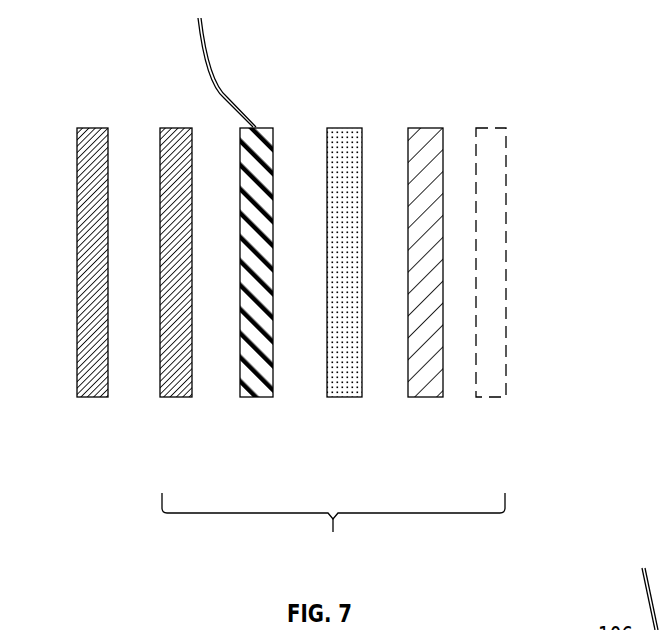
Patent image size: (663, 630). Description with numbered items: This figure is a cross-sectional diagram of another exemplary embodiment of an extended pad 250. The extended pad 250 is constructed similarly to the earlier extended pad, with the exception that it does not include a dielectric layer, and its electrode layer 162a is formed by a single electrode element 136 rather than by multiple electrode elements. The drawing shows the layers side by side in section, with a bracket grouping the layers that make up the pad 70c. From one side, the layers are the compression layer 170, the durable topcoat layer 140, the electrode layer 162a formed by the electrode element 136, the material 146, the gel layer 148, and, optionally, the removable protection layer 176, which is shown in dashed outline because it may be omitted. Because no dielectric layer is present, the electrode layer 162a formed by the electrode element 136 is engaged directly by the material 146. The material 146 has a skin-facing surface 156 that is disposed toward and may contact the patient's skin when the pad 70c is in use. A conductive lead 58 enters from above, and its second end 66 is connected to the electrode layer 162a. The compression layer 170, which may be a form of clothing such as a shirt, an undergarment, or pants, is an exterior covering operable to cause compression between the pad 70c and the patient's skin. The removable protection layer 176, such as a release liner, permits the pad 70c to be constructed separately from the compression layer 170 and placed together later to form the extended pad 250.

The conductive lead 58 is at (222, 90).
The second end 66 is at (263, 126).
The electrode element 136 is at (279, 120).
The durable topcoat layer 140 is at (175, 398).
The material 146 is at (342, 398).
The gel layer 148 is at (427, 398).
The skin-facing surface 156 is at (373, 131).
The electrode layer 162a is at (257, 418).
The compression layer 170 is at (93, 398).
The removable protection layer 176 is at (490, 398).
The extended pad 250 is at (543, 86).
The pad 70c is at (333, 528).